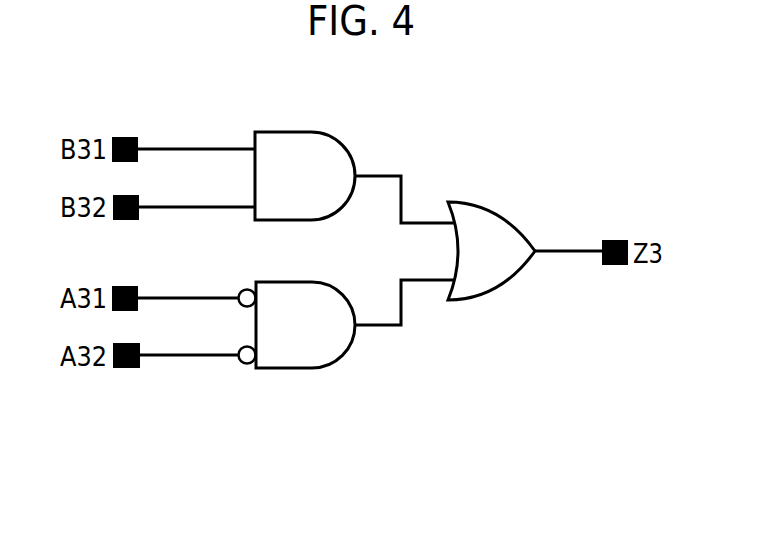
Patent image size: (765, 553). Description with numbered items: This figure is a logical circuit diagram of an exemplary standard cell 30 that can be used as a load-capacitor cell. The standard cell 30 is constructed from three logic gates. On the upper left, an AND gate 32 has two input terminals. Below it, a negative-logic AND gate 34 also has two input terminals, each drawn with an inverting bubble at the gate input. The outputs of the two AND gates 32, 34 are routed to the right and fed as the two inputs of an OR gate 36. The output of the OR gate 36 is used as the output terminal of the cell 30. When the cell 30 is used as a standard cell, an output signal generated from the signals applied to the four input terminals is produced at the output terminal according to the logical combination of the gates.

The standard cell 30 is at (575, 153).
The AND gate 32 is at (318, 133).
The negative-logic AND gate 34 is at (312, 368).
The OR gate 36 is at (507, 285).